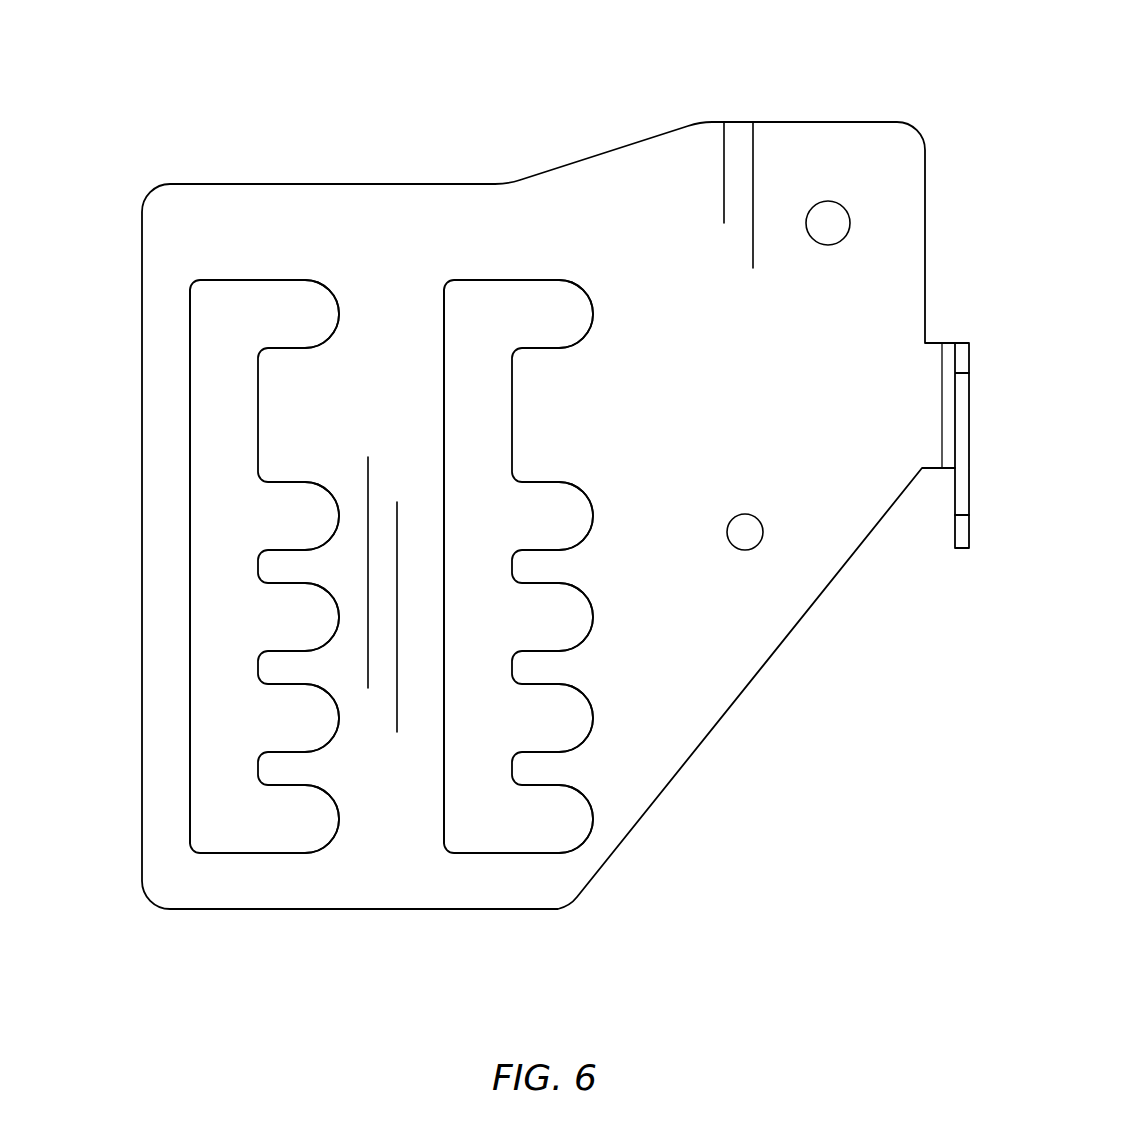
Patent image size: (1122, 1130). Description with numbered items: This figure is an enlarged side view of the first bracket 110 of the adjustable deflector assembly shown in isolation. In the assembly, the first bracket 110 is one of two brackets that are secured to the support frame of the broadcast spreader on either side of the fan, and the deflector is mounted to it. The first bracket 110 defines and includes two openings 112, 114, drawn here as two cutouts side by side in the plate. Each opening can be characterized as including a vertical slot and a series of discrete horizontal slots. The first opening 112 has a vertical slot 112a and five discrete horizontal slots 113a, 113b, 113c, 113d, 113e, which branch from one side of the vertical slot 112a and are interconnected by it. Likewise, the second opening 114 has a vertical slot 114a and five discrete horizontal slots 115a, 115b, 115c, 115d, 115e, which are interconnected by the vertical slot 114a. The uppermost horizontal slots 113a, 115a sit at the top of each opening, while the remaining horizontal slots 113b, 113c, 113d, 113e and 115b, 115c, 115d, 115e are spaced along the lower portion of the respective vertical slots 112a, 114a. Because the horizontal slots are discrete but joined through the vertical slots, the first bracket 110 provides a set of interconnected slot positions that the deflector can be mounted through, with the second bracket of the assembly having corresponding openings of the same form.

The first bracket 110 is at (822, 122).
The opening 112 is at (188, 332).
The vertical slot 112a is at (225, 305).
The horizontal slot 113a is at (312, 278).
The horizontal slot 113b is at (286, 483).
The horizontal slot 113c is at (286, 584).
The horizontal slot 113d is at (286, 685).
The horizontal slot 113e is at (286, 786).
The opening 114 is at (443, 317).
The vertical slot 114a is at (487, 307).
The horizontal slot 115a is at (587, 293).
The horizontal slot 115b is at (592, 520).
The horizontal slot 115c is at (592, 618).
The horizontal slot 115d is at (592, 718).
The horizontal slot 115e is at (592, 818).